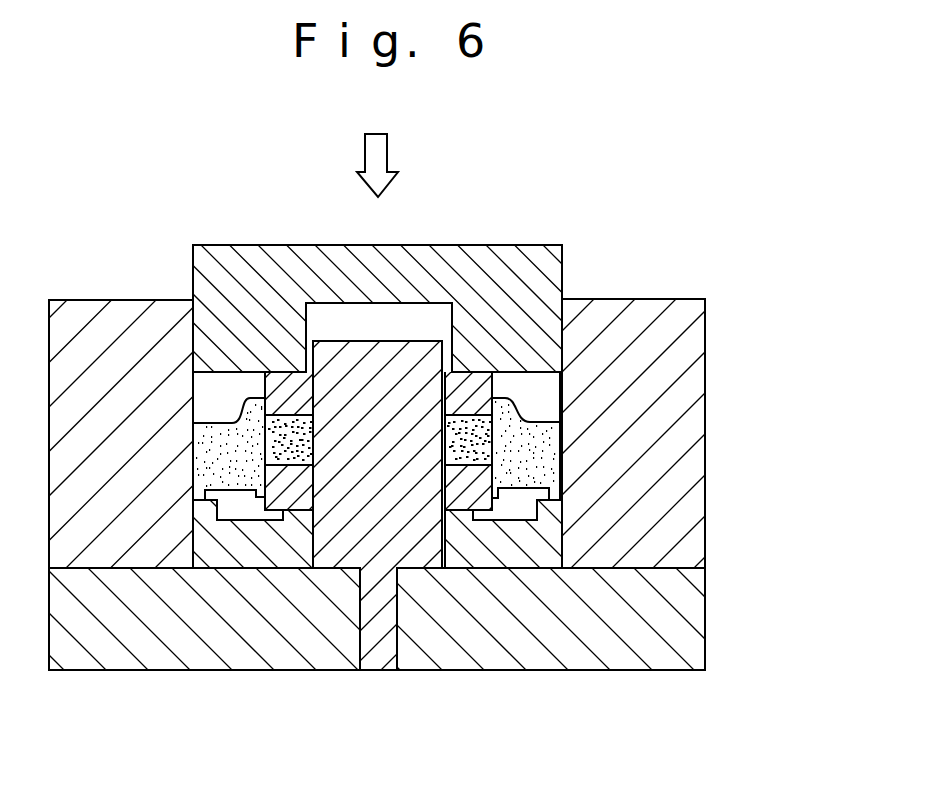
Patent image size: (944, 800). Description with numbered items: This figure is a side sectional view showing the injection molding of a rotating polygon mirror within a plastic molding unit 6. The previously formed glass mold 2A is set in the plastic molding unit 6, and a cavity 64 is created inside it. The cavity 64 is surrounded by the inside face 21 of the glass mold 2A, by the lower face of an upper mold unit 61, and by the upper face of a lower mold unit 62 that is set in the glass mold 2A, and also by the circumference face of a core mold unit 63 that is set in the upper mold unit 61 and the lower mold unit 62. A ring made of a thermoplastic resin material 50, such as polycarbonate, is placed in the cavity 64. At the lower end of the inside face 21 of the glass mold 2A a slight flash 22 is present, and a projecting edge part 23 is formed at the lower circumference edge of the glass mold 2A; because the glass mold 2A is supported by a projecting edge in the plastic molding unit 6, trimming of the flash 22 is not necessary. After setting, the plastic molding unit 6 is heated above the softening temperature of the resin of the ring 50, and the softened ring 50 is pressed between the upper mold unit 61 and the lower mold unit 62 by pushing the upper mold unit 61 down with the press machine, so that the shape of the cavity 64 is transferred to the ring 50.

The plastic molding unit 6 is at (736, 223).
The core mold unit 63 is at (393, 347).
The upper mold unit 61 is at (477, 382).
The lower mold unit 62 is at (455, 490).
The cavity 64 is at (290, 428).
The ring made of a thermoplastic resin material 50 is at (523, 426).
The glass mold 2A is at (552, 467).
The inside face 21 is at (265, 453).
The flash 22 is at (257, 490).
The projecting edge part 23 is at (562, 492).